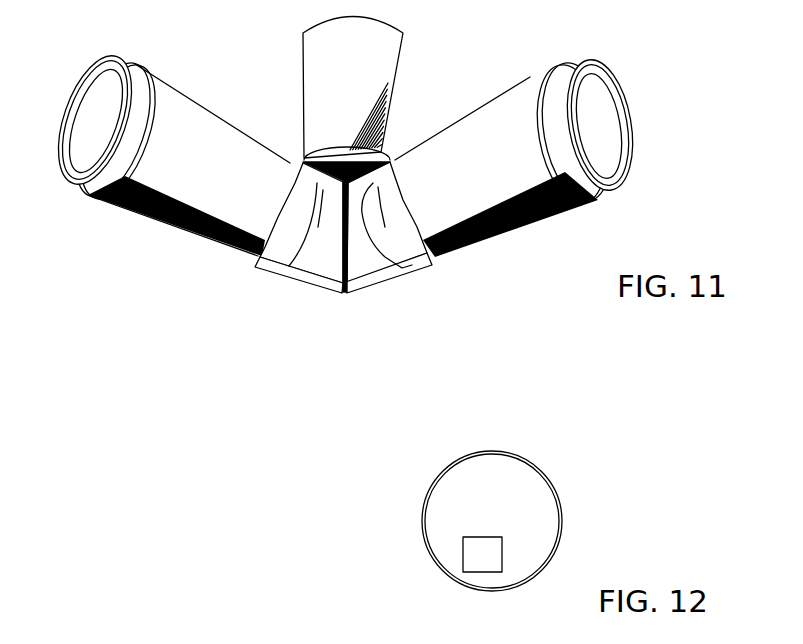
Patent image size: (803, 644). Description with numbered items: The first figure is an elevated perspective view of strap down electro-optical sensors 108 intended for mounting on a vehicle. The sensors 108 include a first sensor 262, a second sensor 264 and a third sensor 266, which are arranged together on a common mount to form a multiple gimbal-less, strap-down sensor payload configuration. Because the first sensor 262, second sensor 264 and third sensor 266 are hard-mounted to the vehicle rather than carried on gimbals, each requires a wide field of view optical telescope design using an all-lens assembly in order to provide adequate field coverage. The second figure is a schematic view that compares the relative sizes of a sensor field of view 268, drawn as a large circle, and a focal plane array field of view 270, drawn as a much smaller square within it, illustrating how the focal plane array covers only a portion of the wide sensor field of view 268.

In FIG. 11, the strap down electro-optical sensors 108 is at (173, 280).
In FIG. 11, the first sensor 262 is at (167, 151).
In FIG. 11, the second sensor 264 is at (386, 89).
In FIG. 11, the third sensor 266 is at (518, 156).
In FIG. 12, the sensor field of view 268 is at (443, 473).
In FIG. 12, the focal plane array field of view 270 is at (463, 555).